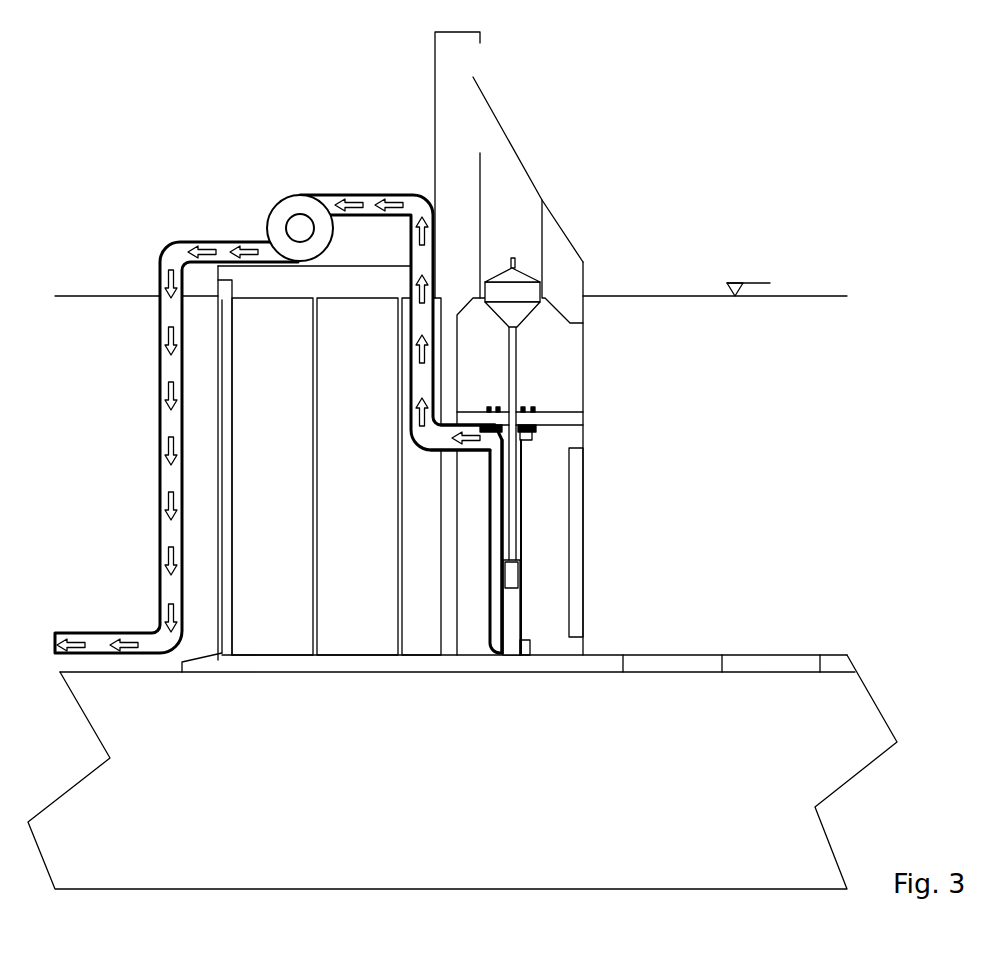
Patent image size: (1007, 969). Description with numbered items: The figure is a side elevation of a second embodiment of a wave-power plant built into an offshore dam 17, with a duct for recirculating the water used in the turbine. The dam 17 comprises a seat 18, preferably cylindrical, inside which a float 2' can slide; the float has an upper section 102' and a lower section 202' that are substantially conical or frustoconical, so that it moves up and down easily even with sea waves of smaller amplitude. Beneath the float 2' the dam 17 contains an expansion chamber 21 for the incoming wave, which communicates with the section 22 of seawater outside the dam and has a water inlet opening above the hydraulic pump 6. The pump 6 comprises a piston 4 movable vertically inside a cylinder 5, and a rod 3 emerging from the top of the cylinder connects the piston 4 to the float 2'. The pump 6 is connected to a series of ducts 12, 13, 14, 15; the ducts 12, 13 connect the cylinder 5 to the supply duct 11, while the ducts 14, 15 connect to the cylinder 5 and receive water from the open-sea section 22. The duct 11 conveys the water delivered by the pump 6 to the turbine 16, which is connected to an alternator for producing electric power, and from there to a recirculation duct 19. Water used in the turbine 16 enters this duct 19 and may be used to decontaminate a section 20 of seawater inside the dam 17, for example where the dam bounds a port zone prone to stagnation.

The float 2' is at (581, 270).
The rod 3 is at (518, 375).
The piston 4 is at (513, 578).
The cylinder 5 is at (513, 618).
The hydraulic pump 6 is at (535, 527).
The supply duct 11 is at (373, 205).
The duct 12 is at (497, 435).
The duct 13 is at (497, 610).
The duct 14 is at (532, 433).
The duct 15 is at (527, 650).
The turbine 16 is at (283, 208).
The offshore dam 17 is at (452, 82).
The seat 18 is at (480, 153).
The recirculation duct 19 is at (170, 430).
The section of seawater inside the offshore dam 20 is at (105, 305).
The expansion chamber 21 is at (573, 390).
The open-sea section 22 is at (812, 313).
The upper section of the float 102' is at (577, 229).
The lower section of the float 202' is at (596, 324).